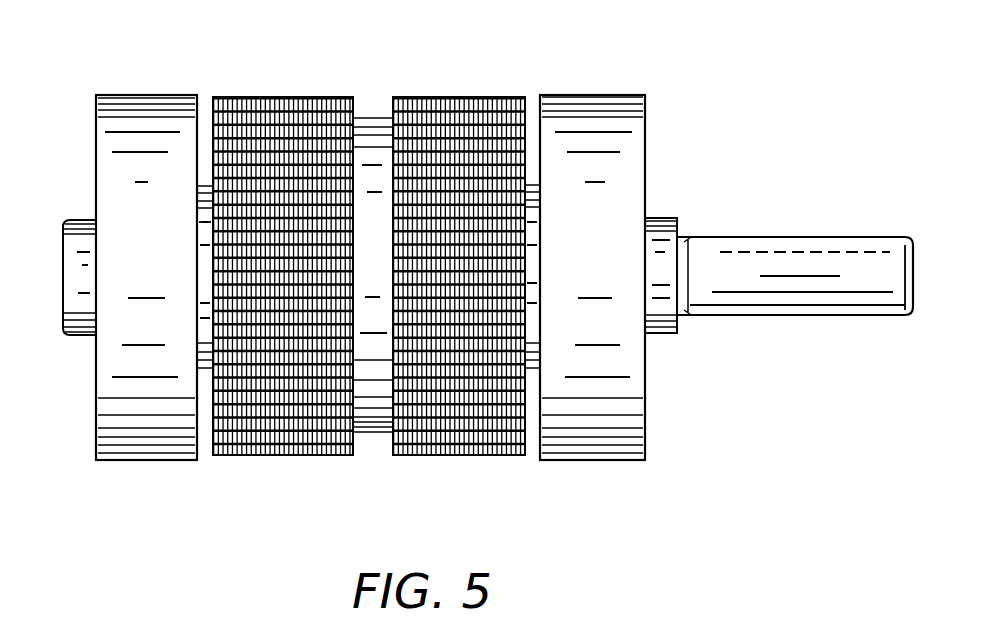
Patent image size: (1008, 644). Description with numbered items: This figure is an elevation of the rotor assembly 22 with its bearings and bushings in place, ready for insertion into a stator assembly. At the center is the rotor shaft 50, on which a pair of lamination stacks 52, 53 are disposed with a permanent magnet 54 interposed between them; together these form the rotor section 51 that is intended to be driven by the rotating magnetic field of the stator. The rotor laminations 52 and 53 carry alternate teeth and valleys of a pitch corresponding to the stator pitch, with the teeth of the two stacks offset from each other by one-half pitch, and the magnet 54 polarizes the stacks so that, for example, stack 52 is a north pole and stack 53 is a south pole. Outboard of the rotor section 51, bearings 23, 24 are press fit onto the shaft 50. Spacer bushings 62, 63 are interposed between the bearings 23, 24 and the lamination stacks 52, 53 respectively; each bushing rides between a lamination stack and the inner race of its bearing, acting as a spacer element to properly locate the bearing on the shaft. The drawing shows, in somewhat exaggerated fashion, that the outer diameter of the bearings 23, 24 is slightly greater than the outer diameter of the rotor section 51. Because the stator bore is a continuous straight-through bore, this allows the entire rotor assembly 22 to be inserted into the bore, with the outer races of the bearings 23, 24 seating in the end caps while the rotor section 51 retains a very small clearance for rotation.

The rotor assembly 22 is at (733, 70).
The bearing 23 is at (150, 463).
The bearing 24 is at (607, 463).
The rotor shaft 50 is at (857, 240).
The rotor section 51 is at (533, 462).
The lamination stack 52 is at (280, 97).
The lamination stack 53 is at (455, 97).
The permanent magnet 54 is at (368, 103).
The spacer bushing 62 is at (197, 229).
The spacer bushing 63 is at (540, 230).